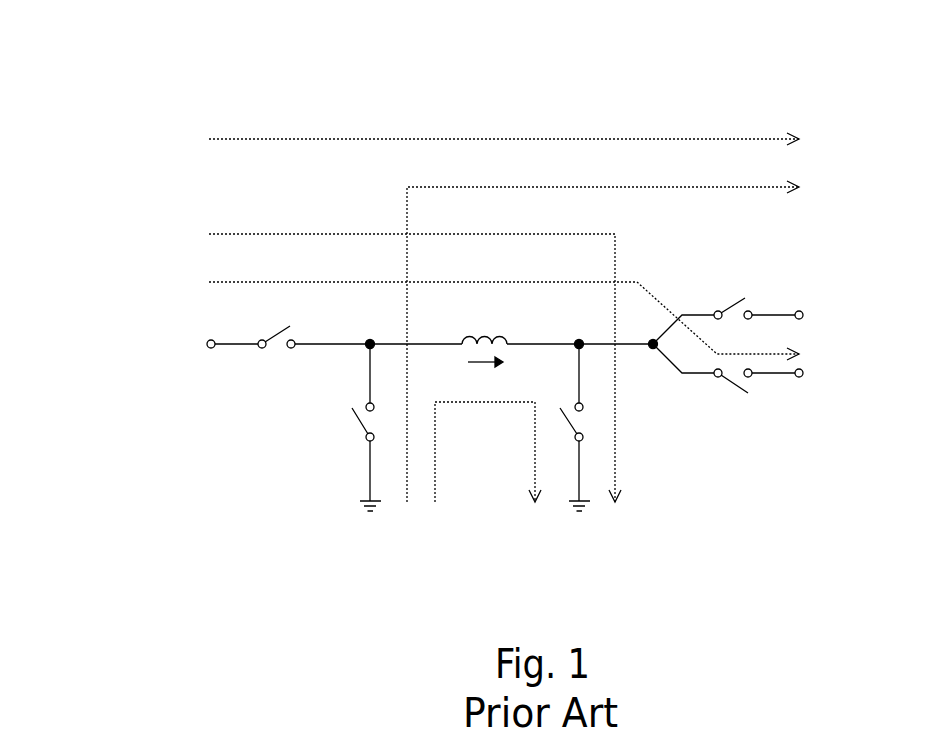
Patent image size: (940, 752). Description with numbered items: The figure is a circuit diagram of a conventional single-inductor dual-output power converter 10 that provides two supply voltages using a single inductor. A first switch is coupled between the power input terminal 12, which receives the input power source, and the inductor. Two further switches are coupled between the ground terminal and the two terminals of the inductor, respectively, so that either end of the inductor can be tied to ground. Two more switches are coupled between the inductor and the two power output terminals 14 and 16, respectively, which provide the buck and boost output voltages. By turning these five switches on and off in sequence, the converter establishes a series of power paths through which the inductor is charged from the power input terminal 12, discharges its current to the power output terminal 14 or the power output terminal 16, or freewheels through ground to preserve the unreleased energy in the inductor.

The single-inductor dual-output power converter 10 is at (878, 118).
The power input terminal 12 is at (210, 338).
The power output terminal 14 is at (801, 312).
The power output terminal 16 is at (800, 378).